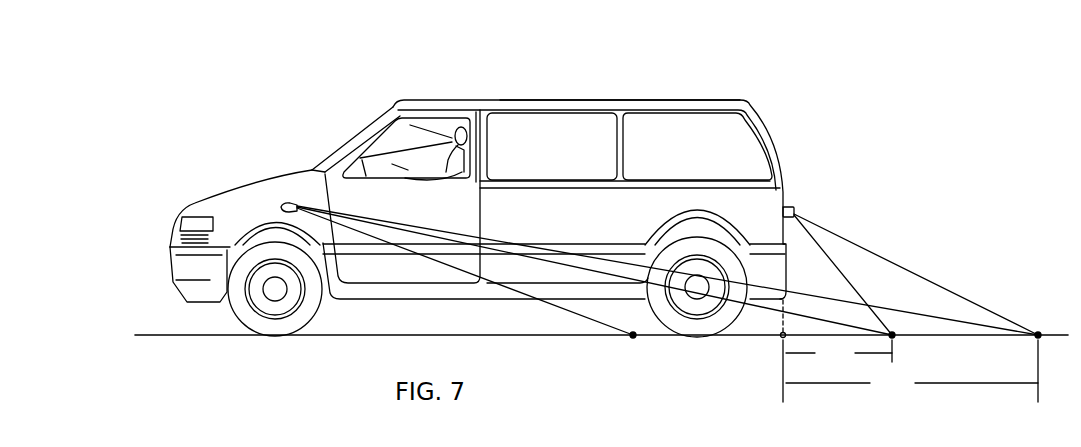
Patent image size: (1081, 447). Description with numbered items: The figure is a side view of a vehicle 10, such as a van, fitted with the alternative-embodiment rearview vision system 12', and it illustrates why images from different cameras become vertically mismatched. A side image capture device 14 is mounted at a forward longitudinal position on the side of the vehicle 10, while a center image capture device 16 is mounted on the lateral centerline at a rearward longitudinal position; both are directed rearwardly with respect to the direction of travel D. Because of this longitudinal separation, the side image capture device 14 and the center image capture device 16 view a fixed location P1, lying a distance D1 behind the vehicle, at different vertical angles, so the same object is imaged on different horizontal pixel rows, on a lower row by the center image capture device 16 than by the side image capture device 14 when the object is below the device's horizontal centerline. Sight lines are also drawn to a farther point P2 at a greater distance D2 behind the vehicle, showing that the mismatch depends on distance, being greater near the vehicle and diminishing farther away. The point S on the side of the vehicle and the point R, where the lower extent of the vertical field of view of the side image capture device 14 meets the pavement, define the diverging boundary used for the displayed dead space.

The vehicle 10 is at (750, 104).
The rearview vision system 12' is at (620, 74).
The side image capture device 14 is at (285, 205).
The center image capture device 16 is at (790, 205).
The direction of travel D is at (462, 127).
The point R is at (632, 349).
The point S is at (771, 330).
The fixed location P1 is at (907, 348).
The point P2 is at (1050, 348).
The distance D1 is at (837, 371).
The distance D2 is at (912, 371).